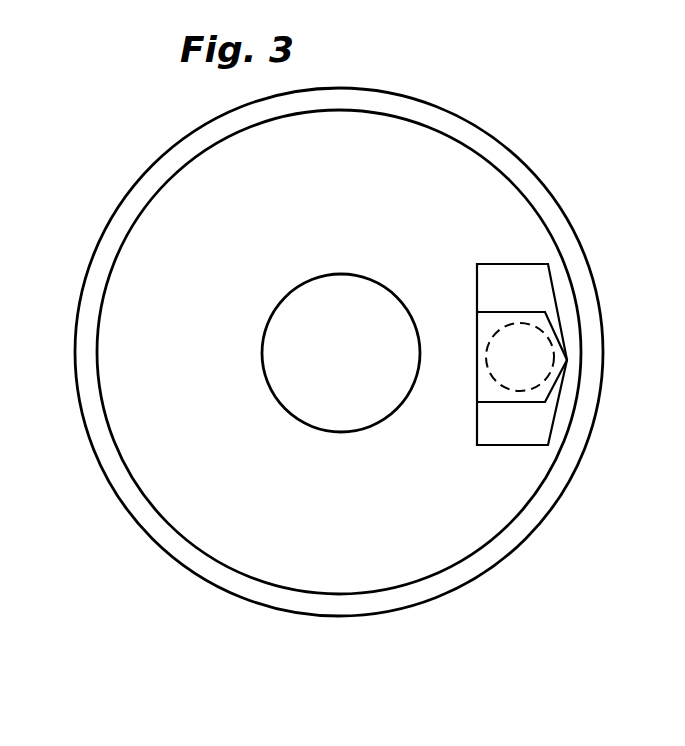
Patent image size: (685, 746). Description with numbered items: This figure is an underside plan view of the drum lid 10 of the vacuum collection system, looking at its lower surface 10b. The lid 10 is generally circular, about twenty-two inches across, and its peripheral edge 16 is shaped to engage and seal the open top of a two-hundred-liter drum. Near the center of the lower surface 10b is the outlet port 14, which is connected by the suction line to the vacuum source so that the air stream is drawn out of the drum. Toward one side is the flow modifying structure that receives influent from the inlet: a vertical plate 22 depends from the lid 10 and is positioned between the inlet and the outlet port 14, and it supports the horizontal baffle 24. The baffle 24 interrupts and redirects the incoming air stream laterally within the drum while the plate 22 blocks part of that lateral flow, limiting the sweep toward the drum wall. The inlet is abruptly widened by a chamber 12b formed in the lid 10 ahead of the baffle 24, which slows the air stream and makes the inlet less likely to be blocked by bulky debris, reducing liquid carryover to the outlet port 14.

The lid 10 is at (533, 151).
The edge 16 is at (300, 112).
The lower surface 10b is at (344, 203).
The outlet port 14 is at (333, 369).
The vertical plate 22 is at (477, 290).
The horizontal baffle 24 is at (547, 324).
The chamber 12b is at (523, 422).